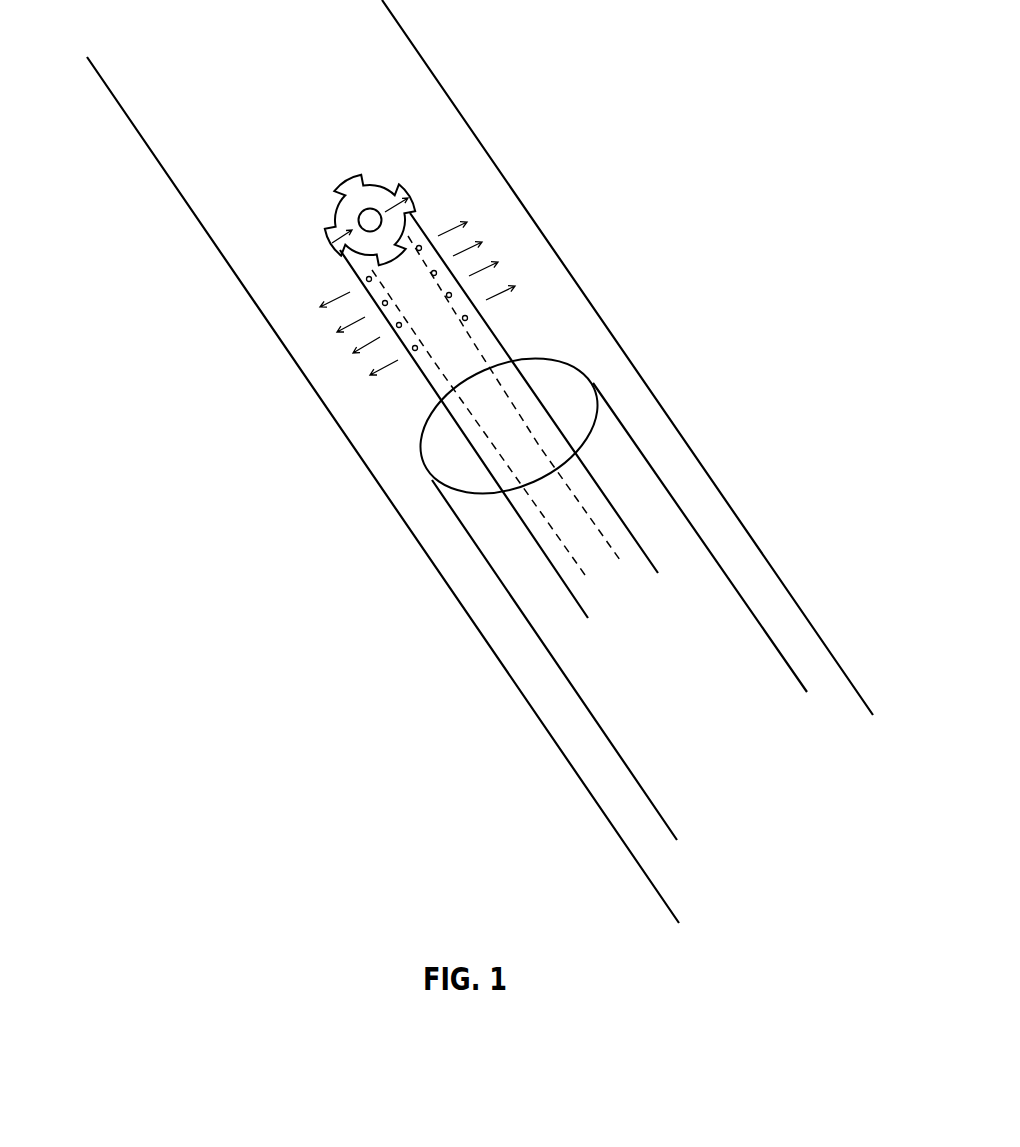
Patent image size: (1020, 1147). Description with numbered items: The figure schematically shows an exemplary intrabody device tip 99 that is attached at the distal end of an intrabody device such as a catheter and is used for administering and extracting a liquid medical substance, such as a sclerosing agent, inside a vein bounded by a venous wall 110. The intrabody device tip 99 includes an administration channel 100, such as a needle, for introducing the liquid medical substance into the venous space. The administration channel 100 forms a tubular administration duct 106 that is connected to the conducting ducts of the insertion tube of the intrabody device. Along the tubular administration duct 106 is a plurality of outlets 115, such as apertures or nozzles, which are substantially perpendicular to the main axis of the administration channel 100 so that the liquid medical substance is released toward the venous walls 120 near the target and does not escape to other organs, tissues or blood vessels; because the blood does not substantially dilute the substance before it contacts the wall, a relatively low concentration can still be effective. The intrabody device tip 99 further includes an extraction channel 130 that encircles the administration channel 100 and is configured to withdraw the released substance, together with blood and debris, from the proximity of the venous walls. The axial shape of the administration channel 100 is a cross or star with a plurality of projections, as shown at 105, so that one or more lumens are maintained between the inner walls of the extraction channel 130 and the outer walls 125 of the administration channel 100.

The intrabody device tip 99 is at (318, 163).
The administration channel 100 is at (492, 325).
The projections of the cross- or star-shaped administration channel 105 is at (347, 176).
The tubular administration duct 106 is at (337, 215).
The venous wall 110 is at (452, 98).
The outlets 115 is at (425, 230).
The venous walls 120 is at (455, 225).
The outer walls of the administration channel 125 is at (495, 355).
The extraction channel 130 is at (542, 645).